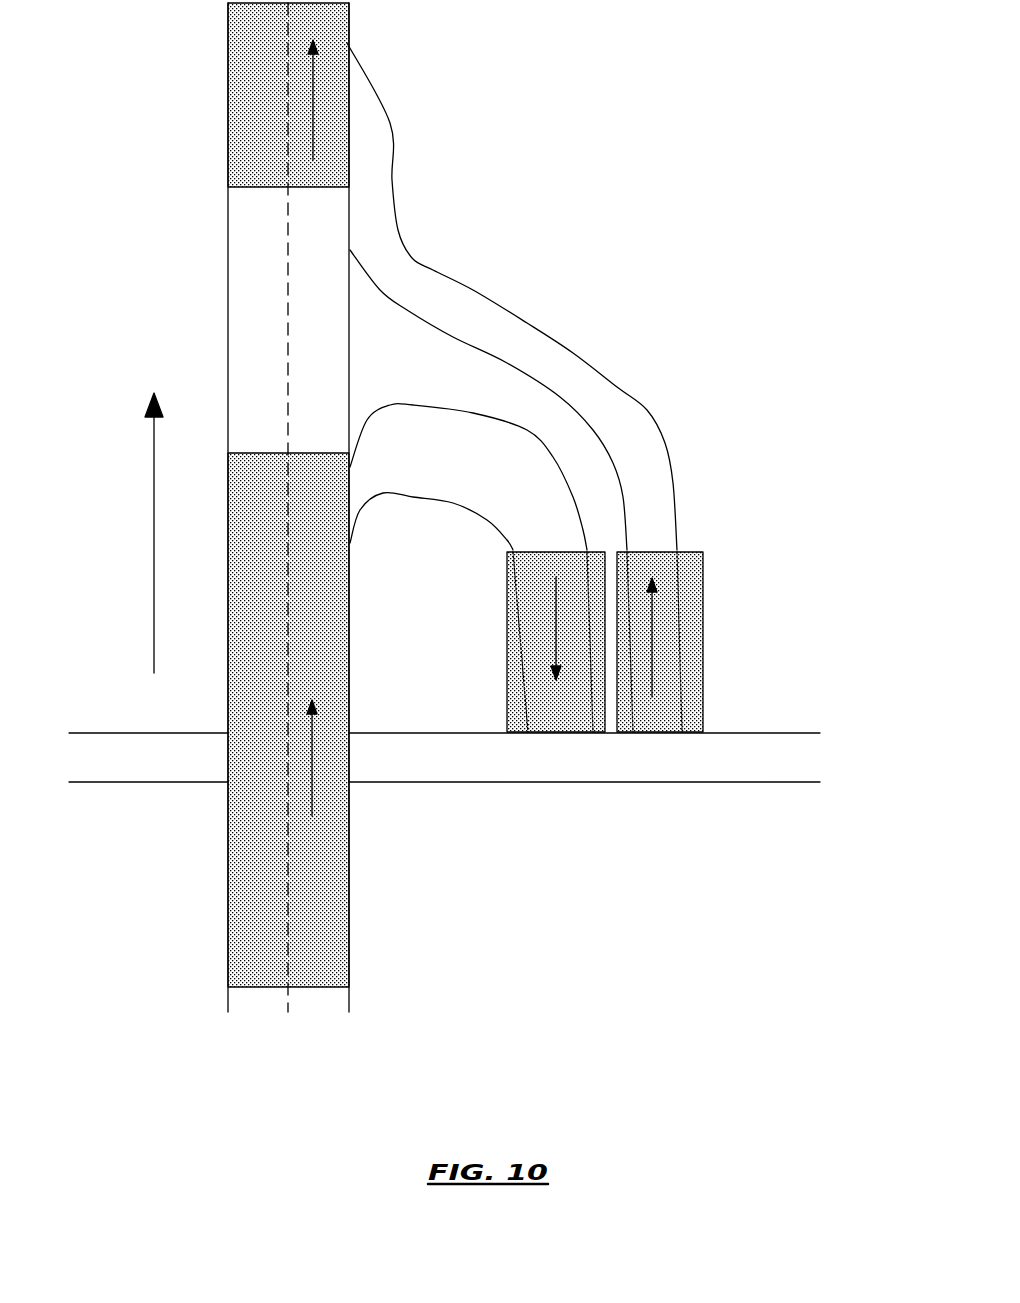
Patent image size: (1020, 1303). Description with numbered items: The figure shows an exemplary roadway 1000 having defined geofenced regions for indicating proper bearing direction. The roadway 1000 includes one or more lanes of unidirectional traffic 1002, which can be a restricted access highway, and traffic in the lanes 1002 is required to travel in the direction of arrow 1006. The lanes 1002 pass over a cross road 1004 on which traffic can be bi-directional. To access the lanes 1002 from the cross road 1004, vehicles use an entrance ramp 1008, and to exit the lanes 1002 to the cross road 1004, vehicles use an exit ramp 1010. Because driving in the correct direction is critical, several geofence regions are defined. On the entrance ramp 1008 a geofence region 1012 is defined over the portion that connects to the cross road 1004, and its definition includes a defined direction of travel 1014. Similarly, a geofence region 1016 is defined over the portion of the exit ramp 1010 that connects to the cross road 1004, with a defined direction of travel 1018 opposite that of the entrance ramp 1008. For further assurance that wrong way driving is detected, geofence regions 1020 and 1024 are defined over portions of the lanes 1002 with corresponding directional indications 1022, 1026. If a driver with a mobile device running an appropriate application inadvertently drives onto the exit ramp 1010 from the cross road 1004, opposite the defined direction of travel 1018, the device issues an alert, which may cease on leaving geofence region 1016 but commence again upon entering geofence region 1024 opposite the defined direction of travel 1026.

The roadway 1000 is at (772, 22).
The lanes of unidirectional traffic 1002 is at (218, 310).
The cross road 1004 is at (160, 785).
The arrow 1006 is at (153, 552).
The entrance ramp 1008 is at (525, 323).
The exit ramp 1010 is at (538, 437).
The geofence region 1012 is at (705, 583).
The defined direction of travel 1014 is at (657, 647).
The geofence region 1016 is at (583, 725).
The defined direction of travel 1018 is at (555, 635).
The geofence region 1020 is at (227, 118).
The directional indication 1022 is at (315, 77).
The geofence region 1024 is at (349, 902).
The directional indication 1026 is at (312, 758).